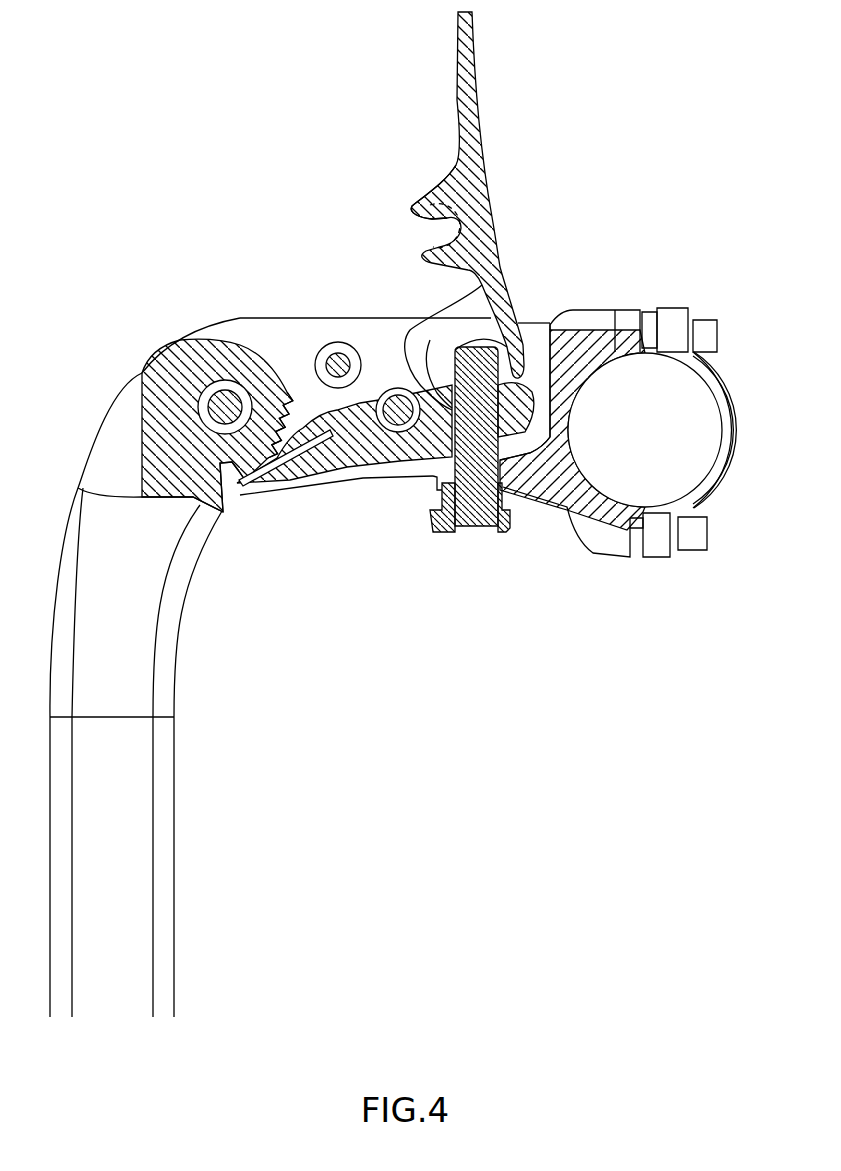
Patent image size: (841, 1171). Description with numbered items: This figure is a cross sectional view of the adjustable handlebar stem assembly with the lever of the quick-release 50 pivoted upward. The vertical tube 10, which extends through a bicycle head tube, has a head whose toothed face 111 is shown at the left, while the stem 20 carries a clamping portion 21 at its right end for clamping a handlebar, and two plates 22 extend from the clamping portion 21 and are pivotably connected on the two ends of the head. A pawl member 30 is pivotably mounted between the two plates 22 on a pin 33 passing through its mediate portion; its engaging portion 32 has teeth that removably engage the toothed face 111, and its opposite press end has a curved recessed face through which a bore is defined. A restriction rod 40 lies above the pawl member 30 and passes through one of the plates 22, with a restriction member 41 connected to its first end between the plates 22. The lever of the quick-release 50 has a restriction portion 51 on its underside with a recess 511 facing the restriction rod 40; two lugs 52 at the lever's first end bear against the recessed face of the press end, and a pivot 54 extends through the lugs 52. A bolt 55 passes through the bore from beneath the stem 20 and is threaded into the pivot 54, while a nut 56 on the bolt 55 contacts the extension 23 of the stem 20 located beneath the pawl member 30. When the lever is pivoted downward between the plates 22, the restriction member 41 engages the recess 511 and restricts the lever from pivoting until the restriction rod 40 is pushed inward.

The vertical tube 10 is at (168, 820).
The toothed face 111 is at (275, 440).
The stem 20 is at (607, 268).
The clamping portion 21 is at (635, 313).
The plates 22 is at (530, 333).
The extension 23 is at (437, 477).
The pawl member 30 is at (344, 417).
The engaging portion 32 is at (235, 498).
The pin 33 is at (407, 435).
The restriction rod 40 is at (330, 366).
The restriction member 41 is at (330, 352).
The quick-release 50 is at (471, 92).
The restriction portion 51 is at (415, 208).
The recess 511 is at (433, 235).
The lugs 52 is at (403, 355).
The pivot 54 is at (440, 342).
The bolt 55 is at (468, 527).
The nut 56 is at (510, 523).